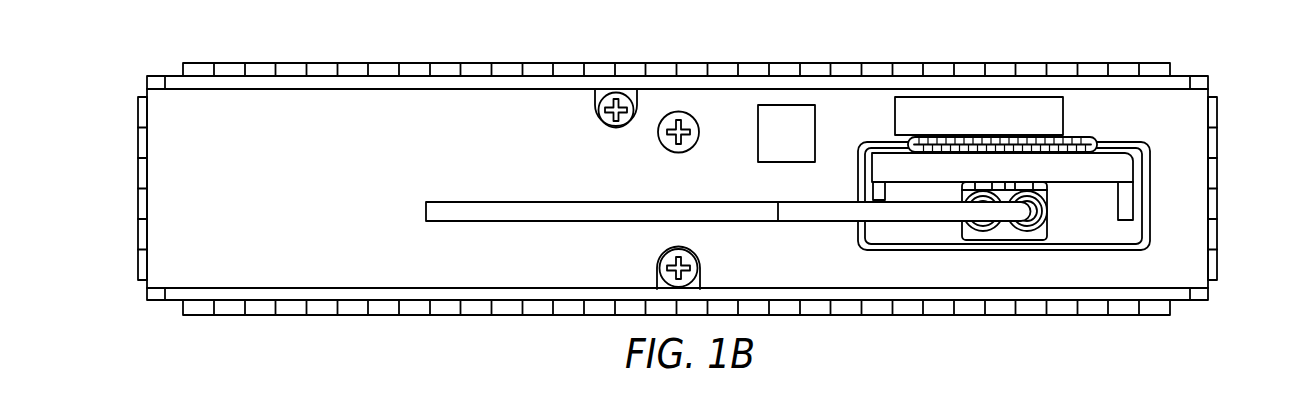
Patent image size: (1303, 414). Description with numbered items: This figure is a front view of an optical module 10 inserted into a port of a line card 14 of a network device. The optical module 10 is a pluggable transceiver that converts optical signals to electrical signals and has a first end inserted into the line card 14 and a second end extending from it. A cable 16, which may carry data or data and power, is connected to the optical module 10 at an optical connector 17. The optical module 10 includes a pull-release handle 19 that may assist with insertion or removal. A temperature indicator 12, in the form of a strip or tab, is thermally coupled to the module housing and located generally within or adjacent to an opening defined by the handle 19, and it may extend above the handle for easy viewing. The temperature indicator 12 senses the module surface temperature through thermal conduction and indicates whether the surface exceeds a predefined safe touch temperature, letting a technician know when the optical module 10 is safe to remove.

The optical module 10 is at (1110, 232).
The temperature indicator 12 is at (1072, 140).
The line card 14 is at (940, 63).
The cable 16 is at (518, 212).
The optical connector 17 is at (1033, 230).
The pull-release handle 19 is at (1117, 168).